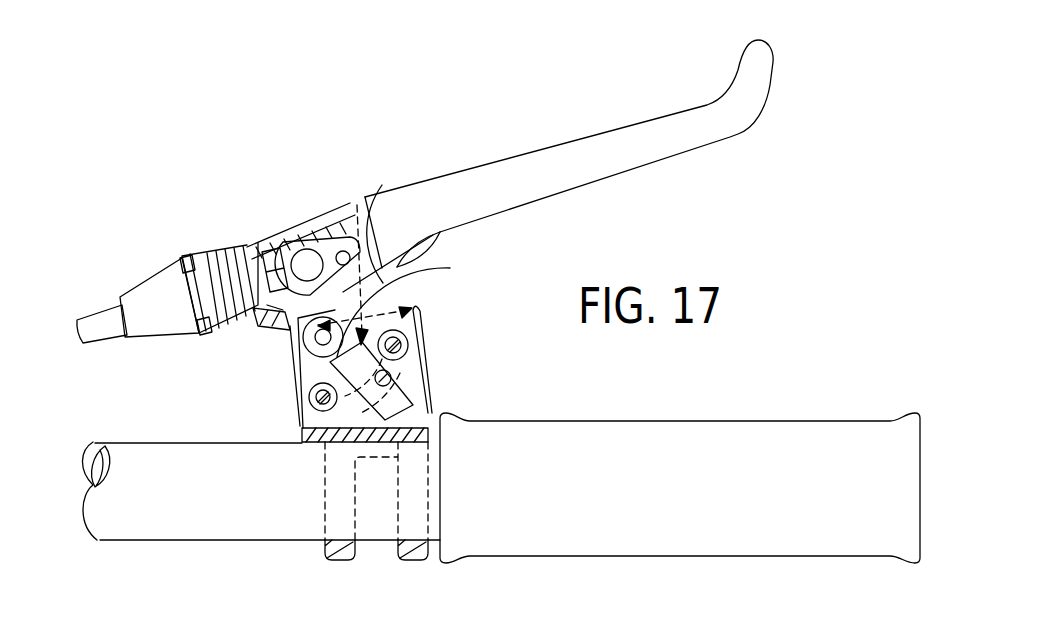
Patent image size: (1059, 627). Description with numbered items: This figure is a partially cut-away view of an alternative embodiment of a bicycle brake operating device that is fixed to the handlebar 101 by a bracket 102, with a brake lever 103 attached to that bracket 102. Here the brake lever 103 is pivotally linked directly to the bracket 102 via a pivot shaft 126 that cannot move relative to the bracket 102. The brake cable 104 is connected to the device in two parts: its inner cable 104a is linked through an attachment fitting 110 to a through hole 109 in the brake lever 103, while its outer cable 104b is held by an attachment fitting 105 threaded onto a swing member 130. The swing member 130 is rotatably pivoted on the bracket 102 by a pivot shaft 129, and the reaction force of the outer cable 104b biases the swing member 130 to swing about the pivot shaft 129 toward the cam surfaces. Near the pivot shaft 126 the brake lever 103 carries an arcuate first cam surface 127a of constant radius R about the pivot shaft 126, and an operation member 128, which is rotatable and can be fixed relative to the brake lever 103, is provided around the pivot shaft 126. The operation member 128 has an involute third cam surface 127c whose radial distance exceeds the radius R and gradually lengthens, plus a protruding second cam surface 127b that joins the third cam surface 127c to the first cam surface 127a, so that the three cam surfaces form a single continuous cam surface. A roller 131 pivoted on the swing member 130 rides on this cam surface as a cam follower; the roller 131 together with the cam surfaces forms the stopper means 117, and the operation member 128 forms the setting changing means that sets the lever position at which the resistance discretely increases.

The handlebar 101 is at (248, 530).
The bracket 102 is at (430, 376).
The brake lever 103 is at (547, 128).
The brake cable 104 is at (97, 300).
The inner cable 104a is at (267, 240).
The outer cable 104b is at (103, 327).
The attachment fitting 105 is at (160, 284).
The through hole 109 is at (378, 188).
The attachment fitting 110 is at (300, 228).
The stopper means 117 is at (414, 307).
The pivot shaft 126 is at (407, 341).
The first cam surface 127a is at (433, 233).
The second cam surface 127b is at (318, 352).
The third cam surface 127c is at (366, 415).
The operation member 128 is at (410, 378).
The pivot shaft 129 is at (300, 420).
The swing member 130 is at (309, 398).
The roller 131 is at (303, 340).
The radius R is at (413, 270).